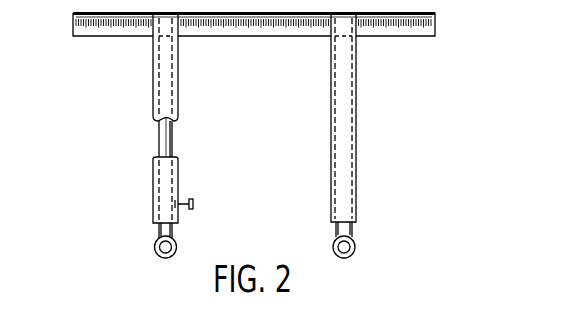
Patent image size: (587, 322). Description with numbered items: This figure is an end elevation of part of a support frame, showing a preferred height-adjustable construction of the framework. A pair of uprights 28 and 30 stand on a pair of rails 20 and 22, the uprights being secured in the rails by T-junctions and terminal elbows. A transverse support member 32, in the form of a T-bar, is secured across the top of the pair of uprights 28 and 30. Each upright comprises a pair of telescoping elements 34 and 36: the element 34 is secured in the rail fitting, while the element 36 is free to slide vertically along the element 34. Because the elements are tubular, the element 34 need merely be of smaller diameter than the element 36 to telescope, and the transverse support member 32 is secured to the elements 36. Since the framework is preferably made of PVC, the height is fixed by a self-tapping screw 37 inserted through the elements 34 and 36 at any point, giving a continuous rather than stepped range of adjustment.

The rail 20 is at (155, 250).
The rail 22 is at (356, 250).
The upright 28 is at (139, 137).
The upright 30 is at (385, 137).
The transverse support member 32 is at (428, 30).
The telescoping element 34 is at (161, 138).
The telescoping element 36 is at (158, 100).
The self-tapping screw 37 is at (192, 196).